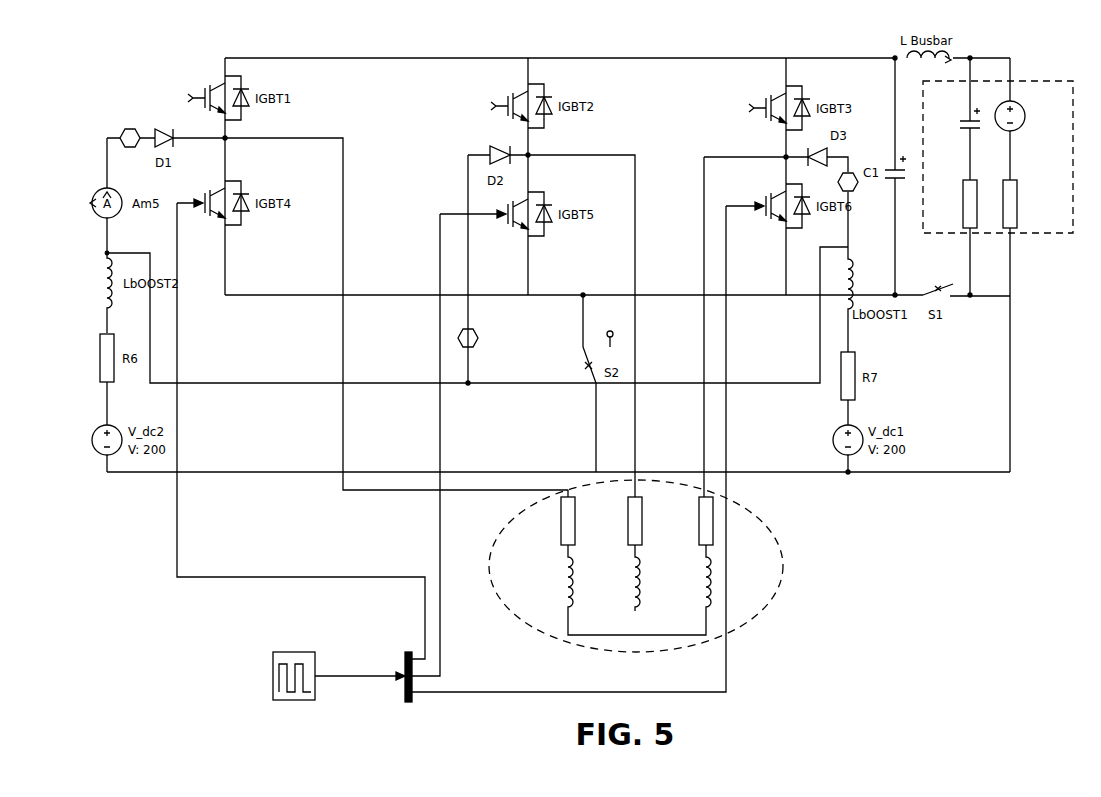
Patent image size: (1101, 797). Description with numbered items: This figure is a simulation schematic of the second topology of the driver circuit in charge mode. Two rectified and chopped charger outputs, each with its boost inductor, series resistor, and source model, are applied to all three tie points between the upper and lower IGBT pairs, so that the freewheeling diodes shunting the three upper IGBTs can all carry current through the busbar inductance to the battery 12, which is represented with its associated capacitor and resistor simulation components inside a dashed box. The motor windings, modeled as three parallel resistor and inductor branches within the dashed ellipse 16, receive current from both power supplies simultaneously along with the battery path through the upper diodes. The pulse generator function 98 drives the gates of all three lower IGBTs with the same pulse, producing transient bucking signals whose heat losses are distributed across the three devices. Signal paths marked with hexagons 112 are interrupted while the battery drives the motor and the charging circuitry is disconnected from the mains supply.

The battery 12 is at (1062, 74).
The load (motor winding model) 16 is at (762, 508).
The pulse generator function 98 is at (300, 652).
The hexagons 112 is at (125, 129).